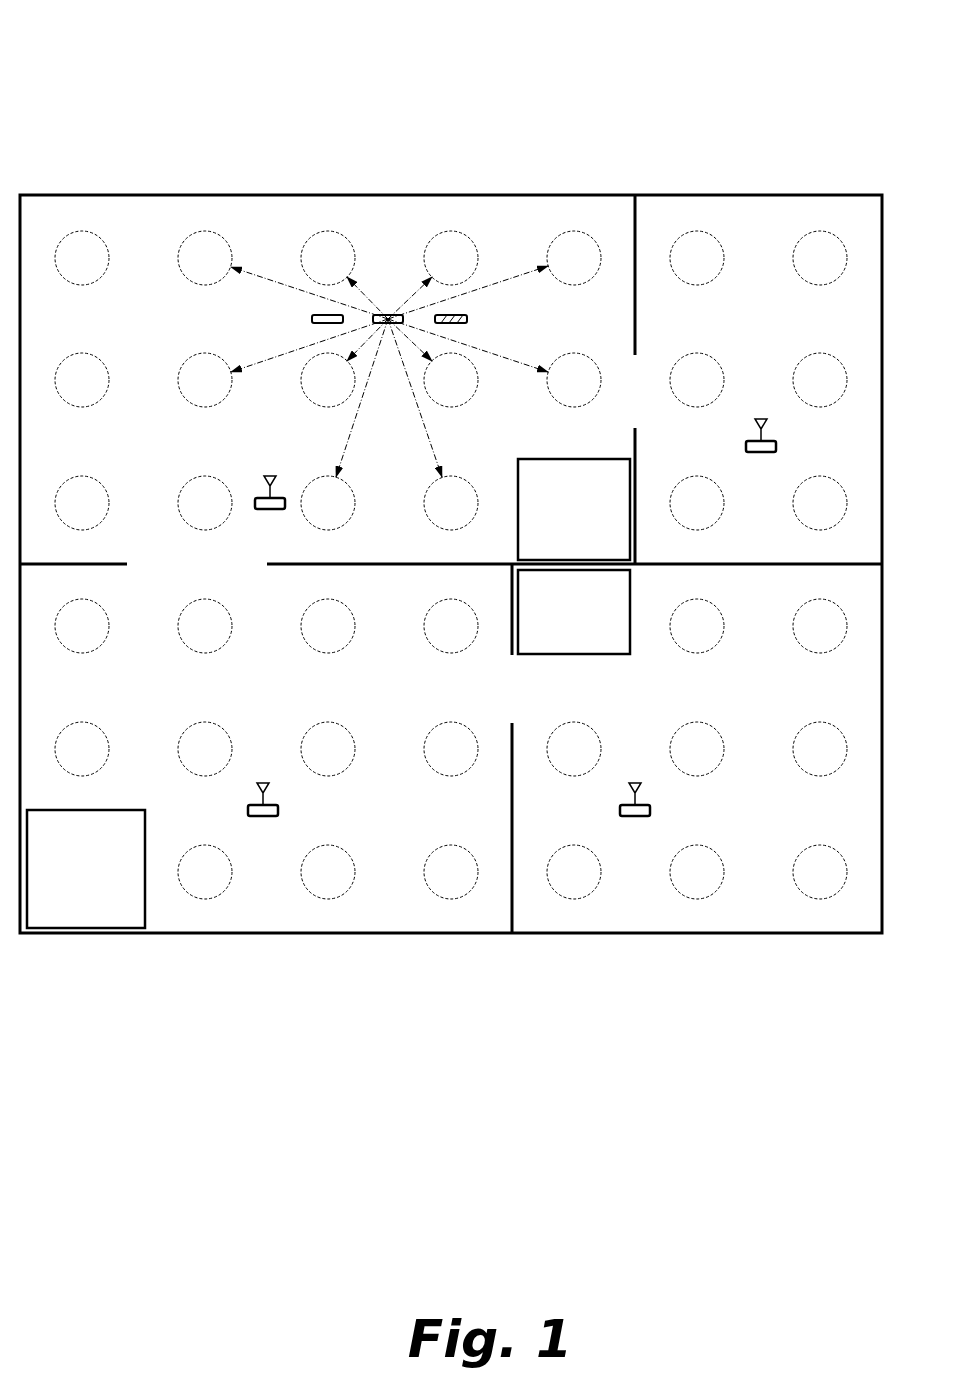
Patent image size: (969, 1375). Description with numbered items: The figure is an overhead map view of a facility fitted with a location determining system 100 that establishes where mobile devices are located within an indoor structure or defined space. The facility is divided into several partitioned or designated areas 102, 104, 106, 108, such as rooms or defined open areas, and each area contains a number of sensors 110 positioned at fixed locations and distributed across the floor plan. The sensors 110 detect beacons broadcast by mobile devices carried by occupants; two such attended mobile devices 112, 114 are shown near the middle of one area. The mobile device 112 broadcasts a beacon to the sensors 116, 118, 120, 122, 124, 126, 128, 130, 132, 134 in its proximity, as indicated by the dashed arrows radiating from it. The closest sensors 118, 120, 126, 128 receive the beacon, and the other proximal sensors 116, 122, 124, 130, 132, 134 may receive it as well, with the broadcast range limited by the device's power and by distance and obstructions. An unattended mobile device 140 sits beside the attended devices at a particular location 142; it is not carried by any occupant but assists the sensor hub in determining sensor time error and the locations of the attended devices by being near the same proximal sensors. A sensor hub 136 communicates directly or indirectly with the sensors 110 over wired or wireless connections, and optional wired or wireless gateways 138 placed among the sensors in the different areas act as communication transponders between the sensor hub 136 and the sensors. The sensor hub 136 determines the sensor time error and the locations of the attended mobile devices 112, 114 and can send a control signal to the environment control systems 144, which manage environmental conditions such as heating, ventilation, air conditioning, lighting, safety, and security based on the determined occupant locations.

The location determining system 100 is at (157, 60).
The area 102 is at (247, 224).
The area 104 is at (739, 224).
The area 106 is at (248, 926).
The area 108 is at (739, 926).
The sensor 110 is at (451, 565).
The mobile device 112 is at (386, 313).
The mobile device 114 is at (312, 319).
The sensor 116 is at (168, 160).
The sensor 118 is at (278, 160).
The sensor 120 is at (415, 160).
The sensor 122 is at (540, 160).
The sensor 124 is at (160, 433).
The sensor 126 is at (283, 433).
The sensor 128 is at (503, 424).
The sensor 130 is at (652, 429).
The sensor 132 is at (275, 582).
The sensor 134 is at (402, 582).
The sensor hub 136 is at (73, 904).
The gateway 138 is at (266, 510).
The unattended mobile device 140 is at (473, 317).
The particular location 142 is at (470, 323).
The environment control system 144 is at (562, 536).